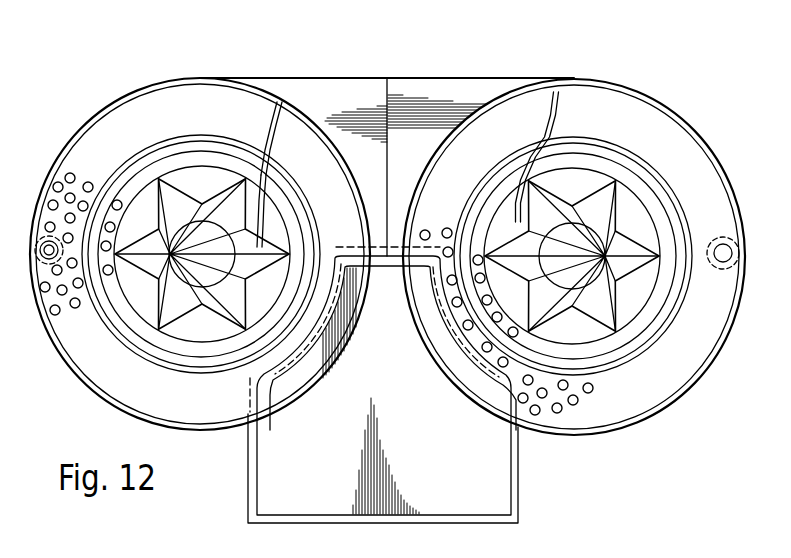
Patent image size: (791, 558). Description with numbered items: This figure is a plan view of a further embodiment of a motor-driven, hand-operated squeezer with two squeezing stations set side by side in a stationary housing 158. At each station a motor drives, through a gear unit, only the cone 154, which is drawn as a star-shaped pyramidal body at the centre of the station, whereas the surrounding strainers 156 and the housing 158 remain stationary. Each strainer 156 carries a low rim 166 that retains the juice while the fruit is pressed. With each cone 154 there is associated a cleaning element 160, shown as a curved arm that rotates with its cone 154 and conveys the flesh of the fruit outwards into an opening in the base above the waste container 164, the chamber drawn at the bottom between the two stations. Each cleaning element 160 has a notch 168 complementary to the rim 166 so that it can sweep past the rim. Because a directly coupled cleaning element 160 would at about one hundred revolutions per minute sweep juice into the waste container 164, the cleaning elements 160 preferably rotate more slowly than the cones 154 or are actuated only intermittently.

The cone 154 is at (153, 223).
The strainer 156 is at (88, 142).
The housing 158 is at (368, 79).
The cleaning element 160 is at (263, 124).
The waste container 164 is at (473, 454).
The rim 166 is at (149, 348).
The notch 168 is at (278, 151).